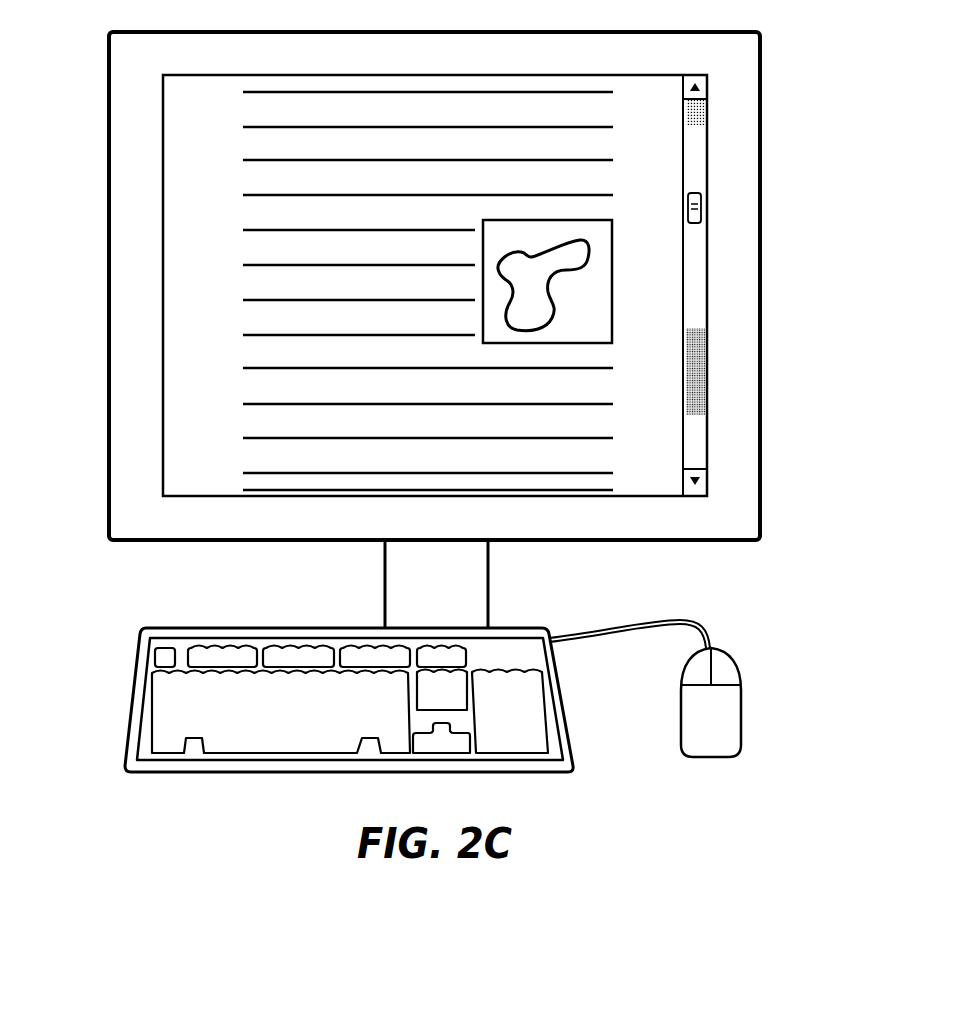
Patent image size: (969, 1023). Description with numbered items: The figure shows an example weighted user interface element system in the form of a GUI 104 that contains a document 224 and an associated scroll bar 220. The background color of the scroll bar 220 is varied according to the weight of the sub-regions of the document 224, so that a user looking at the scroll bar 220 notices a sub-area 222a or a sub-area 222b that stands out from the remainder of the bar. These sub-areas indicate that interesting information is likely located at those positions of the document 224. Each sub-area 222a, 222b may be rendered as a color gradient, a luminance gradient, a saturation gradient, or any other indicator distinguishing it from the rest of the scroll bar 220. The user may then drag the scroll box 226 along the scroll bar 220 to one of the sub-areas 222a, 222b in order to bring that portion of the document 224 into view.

The GUI 104 is at (150, 470).
The scroll bar 220 is at (722, 480).
The sub-area 222a is at (722, 368).
The sub-area 222b is at (722, 112).
The document 224 is at (190, 299).
The scroll box 226 is at (722, 207).